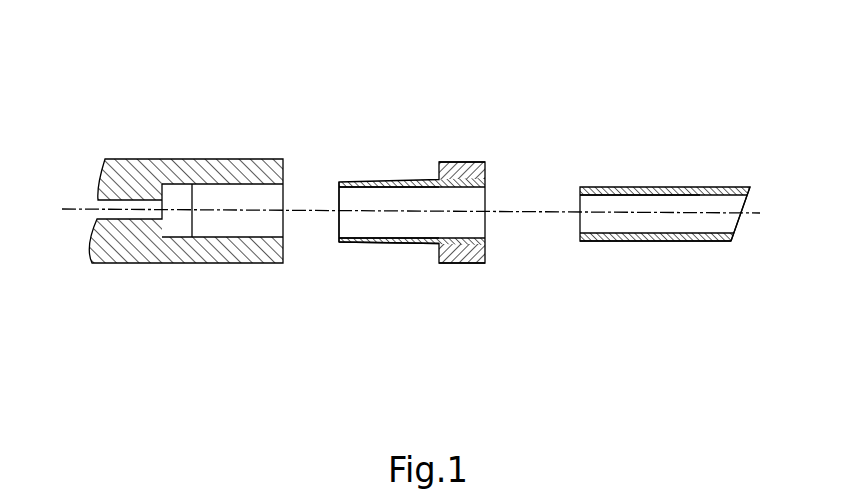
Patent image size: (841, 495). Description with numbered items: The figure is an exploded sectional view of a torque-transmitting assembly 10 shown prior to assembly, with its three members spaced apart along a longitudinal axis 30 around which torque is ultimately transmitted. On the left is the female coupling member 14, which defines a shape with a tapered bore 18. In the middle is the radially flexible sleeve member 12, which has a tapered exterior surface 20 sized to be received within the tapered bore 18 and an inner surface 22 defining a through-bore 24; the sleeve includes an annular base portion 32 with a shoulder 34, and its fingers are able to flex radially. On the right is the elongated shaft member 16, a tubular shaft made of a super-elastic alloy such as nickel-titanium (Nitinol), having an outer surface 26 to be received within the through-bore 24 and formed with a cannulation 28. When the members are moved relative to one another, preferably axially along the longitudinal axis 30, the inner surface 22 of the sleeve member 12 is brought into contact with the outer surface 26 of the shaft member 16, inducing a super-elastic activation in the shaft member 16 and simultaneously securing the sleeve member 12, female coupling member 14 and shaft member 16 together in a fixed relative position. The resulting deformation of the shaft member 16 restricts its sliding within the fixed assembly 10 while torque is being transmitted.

The torque-transmitting assembly 10 is at (215, 93).
The radially flexible sleeve member 12 is at (456, 152).
The female coupling member 14 is at (163, 262).
The elongated shaft member 16 is at (700, 189).
The tapered bore 18 is at (248, 224).
The tapered exterior surface 20 is at (402, 243).
The inner surface 22 is at (394, 188).
The through-bore 24 is at (463, 203).
The outer surface 26 is at (641, 243).
The cannulation 28 is at (707, 209).
The longitudinal axis 30 is at (756, 216).
The annular base portion 32 is at (487, 162).
The shoulder 34 is at (439, 258).